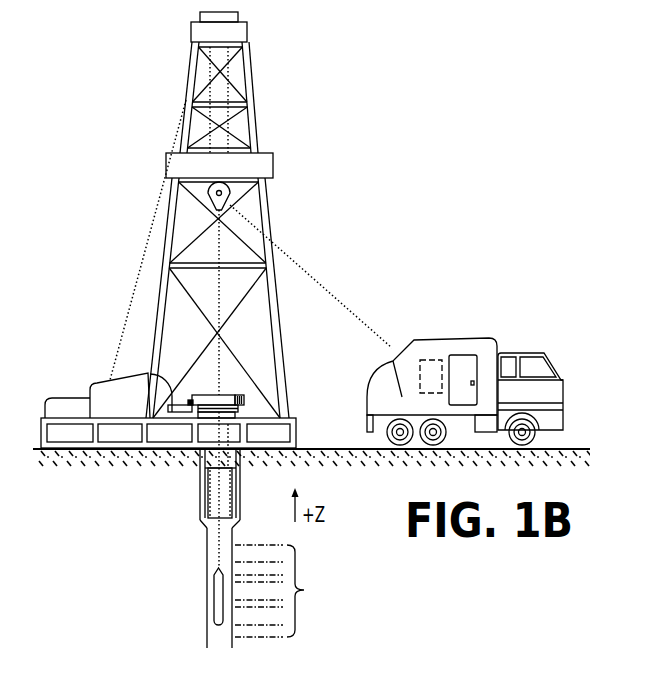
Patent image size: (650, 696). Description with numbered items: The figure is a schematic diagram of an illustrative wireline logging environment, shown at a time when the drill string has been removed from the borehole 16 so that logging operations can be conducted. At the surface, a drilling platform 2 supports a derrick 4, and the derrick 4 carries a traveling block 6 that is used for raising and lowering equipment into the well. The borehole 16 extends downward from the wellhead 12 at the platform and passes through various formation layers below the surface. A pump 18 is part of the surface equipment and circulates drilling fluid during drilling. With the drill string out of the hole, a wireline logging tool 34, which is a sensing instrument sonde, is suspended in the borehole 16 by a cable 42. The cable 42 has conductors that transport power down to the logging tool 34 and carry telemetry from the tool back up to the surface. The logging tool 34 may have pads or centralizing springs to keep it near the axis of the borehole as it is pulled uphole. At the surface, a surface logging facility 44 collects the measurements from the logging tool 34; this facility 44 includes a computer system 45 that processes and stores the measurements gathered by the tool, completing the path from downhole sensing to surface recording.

The drilling platform 2 is at (298, 428).
The derrick 4 is at (285, 386).
The traveling block 6 is at (231, 193).
The wellhead 12 is at (233, 394).
The borehole 16 is at (207, 622).
The pump 18 is at (284, 591).
The wireline logging tool 34 is at (214, 592).
The cable 42 is at (305, 252).
The surface logging facility 44 is at (488, 338).
The computer system 45 is at (425, 360).